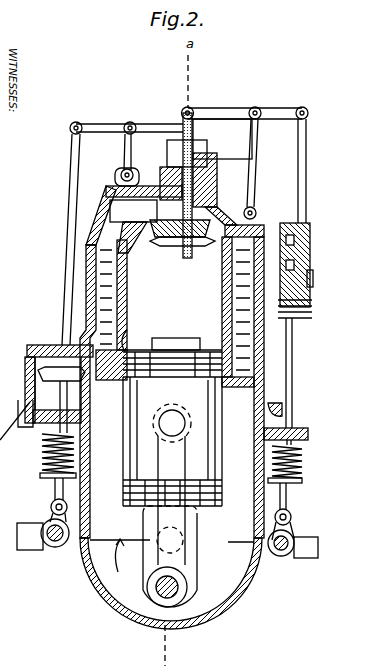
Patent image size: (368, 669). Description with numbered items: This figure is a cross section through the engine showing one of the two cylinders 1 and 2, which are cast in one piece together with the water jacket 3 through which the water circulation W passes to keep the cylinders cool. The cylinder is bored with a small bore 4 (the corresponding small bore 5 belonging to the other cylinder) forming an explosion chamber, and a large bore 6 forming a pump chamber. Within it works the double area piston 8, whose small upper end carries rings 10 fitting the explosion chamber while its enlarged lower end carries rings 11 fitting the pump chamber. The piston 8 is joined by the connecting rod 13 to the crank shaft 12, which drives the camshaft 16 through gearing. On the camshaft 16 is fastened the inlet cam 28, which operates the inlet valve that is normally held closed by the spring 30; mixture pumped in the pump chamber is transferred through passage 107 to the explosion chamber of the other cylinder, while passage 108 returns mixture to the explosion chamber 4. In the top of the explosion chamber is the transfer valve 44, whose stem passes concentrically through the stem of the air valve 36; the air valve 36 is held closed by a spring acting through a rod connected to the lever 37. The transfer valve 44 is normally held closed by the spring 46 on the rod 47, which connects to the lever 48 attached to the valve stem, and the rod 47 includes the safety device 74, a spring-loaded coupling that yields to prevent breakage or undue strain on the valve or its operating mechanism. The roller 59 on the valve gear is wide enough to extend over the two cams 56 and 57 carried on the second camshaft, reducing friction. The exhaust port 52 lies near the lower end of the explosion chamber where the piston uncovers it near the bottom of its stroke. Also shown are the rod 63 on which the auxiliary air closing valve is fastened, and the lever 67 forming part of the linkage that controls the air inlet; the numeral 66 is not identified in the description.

The cylinder 1 is at (266, 397).
The cylinder 2 is at (20, 410).
The water jacket 3 is at (250, 258).
The small bore 4 is at (30, 350).
The small bore 5 is at (27, 373).
The large bore 6 is at (111, 328).
The double area piston 8 is at (165, 410).
The rings 10 is at (133, 350).
The rings 11 is at (118, 480).
The crank shaft 12 is at (178, 584).
The connecting rod 13 is at (185, 518).
The camshaft 16 is at (52, 547).
The inlet cam 28 is at (60, 548).
The spring 30 is at (42, 452).
The air valve 36 is at (233, 214).
The lever 37 is at (118, 124).
The transfer valve 44 is at (188, 258).
The spring 46 is at (303, 462).
The rod 47 is at (293, 350).
The lever 48 is at (243, 112).
The exhaust port 52 is at (186, 345).
The cam 56 is at (287, 508).
The cam 57 is at (292, 538).
The roller 59 is at (290, 519).
The rod 63 is at (218, 137).
The nut 66 is at (312, 304).
The lever 67 is at (282, 412).
The safety device 74 is at (311, 258).
The transfer passage 107 is at (88, 340).
The transfer passage 108 is at (133, 226).
The water circulation W is at (105, 278).